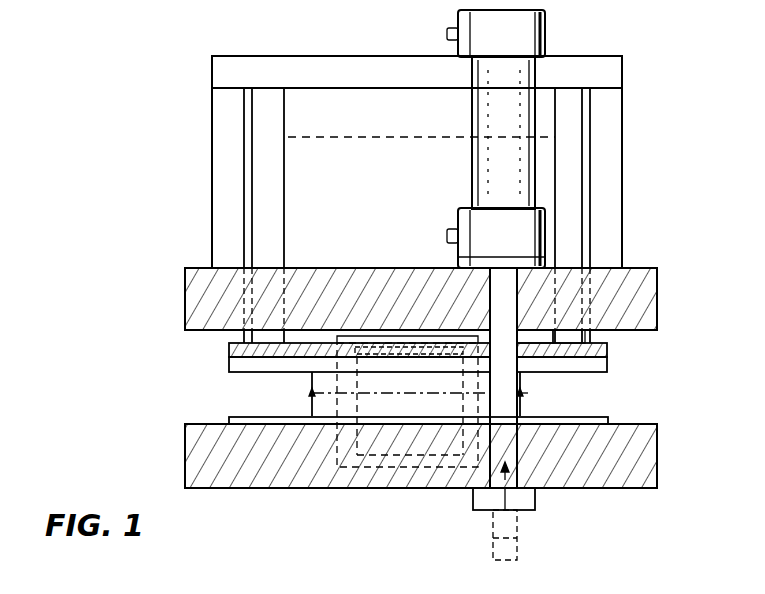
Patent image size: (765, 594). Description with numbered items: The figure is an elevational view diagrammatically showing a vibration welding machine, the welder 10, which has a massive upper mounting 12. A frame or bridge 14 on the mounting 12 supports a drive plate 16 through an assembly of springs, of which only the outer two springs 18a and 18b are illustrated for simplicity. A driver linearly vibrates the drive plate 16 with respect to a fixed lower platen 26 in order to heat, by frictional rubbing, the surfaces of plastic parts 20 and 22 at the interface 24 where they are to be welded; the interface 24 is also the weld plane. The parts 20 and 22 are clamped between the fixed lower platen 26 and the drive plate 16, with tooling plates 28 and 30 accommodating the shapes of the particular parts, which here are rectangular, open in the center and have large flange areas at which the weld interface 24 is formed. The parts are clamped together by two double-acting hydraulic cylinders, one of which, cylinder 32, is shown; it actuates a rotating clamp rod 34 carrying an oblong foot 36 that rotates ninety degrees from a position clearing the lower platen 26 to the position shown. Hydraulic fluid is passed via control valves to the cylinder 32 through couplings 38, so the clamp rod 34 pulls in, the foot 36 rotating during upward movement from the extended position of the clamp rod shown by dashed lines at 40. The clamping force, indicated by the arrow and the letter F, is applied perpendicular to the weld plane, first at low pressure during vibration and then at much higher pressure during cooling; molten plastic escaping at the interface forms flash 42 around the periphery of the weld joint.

The welder 10 is at (178, 150).
The upper mounting 12 is at (657, 292).
The frame or bridge 14 is at (622, 192).
The drive plate 16 is at (607, 350).
The spring 18a is at (276, 120).
The spring 18b is at (578, 124).
The plastic part 20 is at (356, 338).
The plastic part 22 is at (358, 468).
The interface 24 is at (382, 394).
The lower platen 26 is at (622, 488).
The tooling plate 28 is at (229, 364).
The tooling plate 30 is at (602, 417).
The double-acting hydraulic cylinder 32 is at (475, 112).
The clamp rod 34 is at (500, 305).
The foot 36 is at (535, 497).
The couplings 38 is at (446, 30).
The extended position of the clamp rod 40 is at (517, 556).
The flash 42 is at (312, 393).